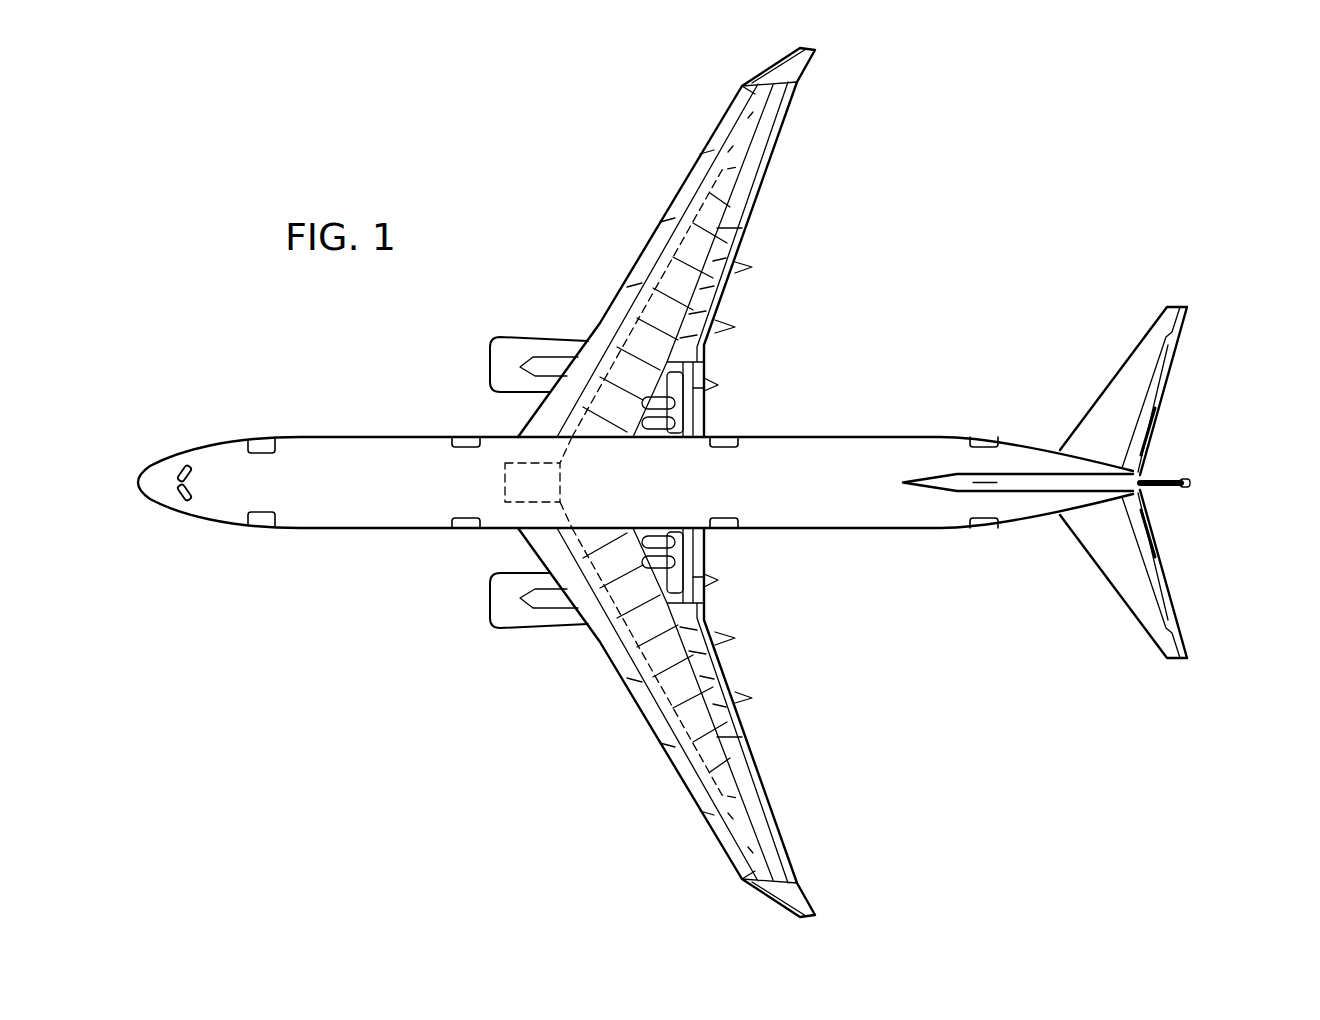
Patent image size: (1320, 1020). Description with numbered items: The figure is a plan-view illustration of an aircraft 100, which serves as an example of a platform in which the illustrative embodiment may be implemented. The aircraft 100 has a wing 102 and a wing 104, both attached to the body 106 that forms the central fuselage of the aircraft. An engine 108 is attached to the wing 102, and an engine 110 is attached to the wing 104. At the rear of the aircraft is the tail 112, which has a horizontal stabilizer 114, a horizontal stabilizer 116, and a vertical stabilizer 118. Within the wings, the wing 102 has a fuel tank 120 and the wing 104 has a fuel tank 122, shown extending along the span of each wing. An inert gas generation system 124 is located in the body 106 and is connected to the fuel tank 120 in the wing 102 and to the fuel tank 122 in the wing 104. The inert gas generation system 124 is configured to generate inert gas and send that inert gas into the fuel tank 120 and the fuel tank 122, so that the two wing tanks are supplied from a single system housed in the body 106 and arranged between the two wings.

The aircraft 100 is at (1066, 186).
The wing 102 is at (633, 254).
The wing 104 is at (633, 711).
The body 106 is at (377, 445).
The engine 108 is at (490, 356).
The engine 110 is at (490, 609).
The tail 112 is at (1118, 390).
The horizontal stabilizer 114 is at (1174, 395).
The horizontal stabilizer 116 is at (1174, 570).
The vertical stabilizer 118 is at (1170, 482).
The fuel tank 120 is at (690, 197).
The fuel tank 122 is at (686, 772).
The inert gas generation system 124 is at (505, 483).